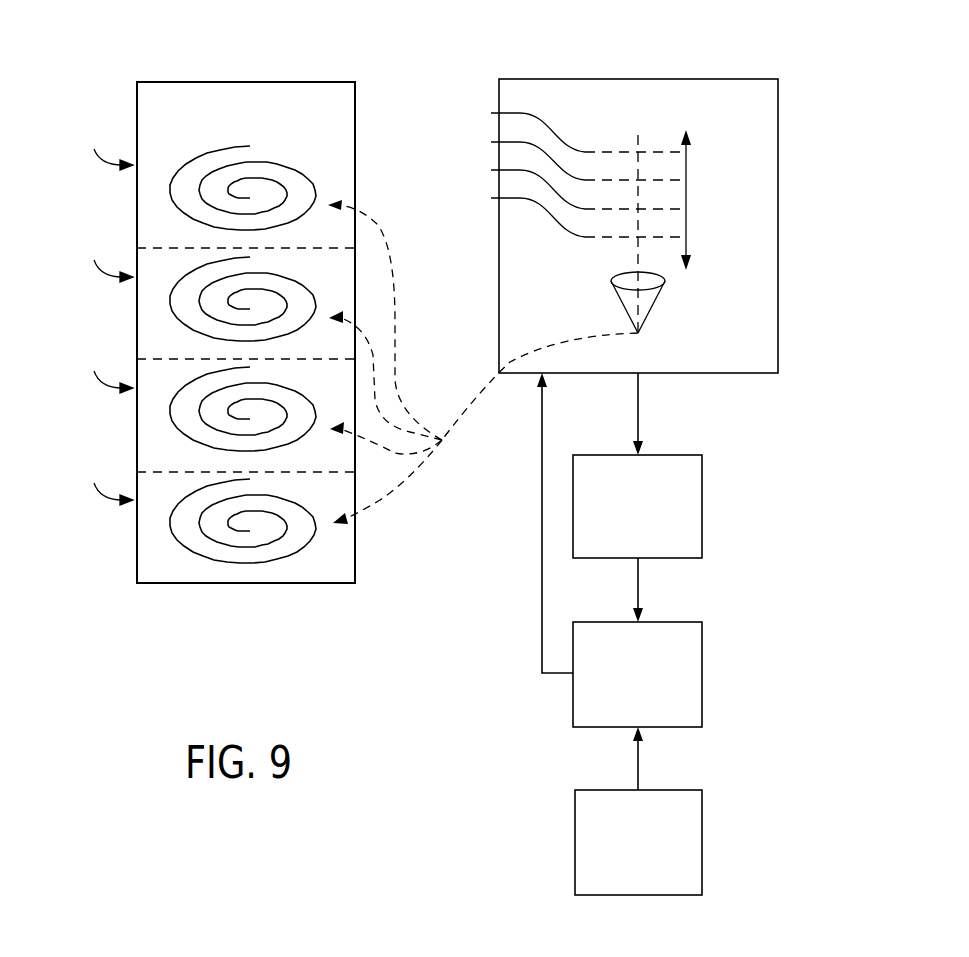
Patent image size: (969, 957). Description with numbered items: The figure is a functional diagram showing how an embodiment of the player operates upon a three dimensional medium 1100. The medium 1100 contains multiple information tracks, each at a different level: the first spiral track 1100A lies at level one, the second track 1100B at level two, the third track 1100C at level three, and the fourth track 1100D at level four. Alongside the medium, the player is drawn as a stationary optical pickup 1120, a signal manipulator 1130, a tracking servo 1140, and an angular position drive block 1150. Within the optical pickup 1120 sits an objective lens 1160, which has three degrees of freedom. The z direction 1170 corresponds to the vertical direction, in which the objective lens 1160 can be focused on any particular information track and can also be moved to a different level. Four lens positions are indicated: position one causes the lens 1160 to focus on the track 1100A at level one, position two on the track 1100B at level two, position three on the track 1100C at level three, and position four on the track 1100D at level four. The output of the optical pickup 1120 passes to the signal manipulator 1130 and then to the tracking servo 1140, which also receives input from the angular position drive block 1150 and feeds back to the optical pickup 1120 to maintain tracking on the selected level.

The medium 1100 is at (168, 82).
The level 1 spiral track 1100A is at (172, 199).
The level 2 spiral track 1100B is at (174, 299).
The level 3 spiral track 1100C is at (174, 409).
The level 4 spiral track 1100D is at (174, 521).
The stationary optical pickup 1120 is at (778, 82).
The signal manipulator 1130 is at (702, 455).
The tracking servo 1140 is at (702, 622).
The angular position drive block 1150 is at (702, 790).
The objective lens 1160 is at (653, 309).
The z direction 1170 is at (686, 202).